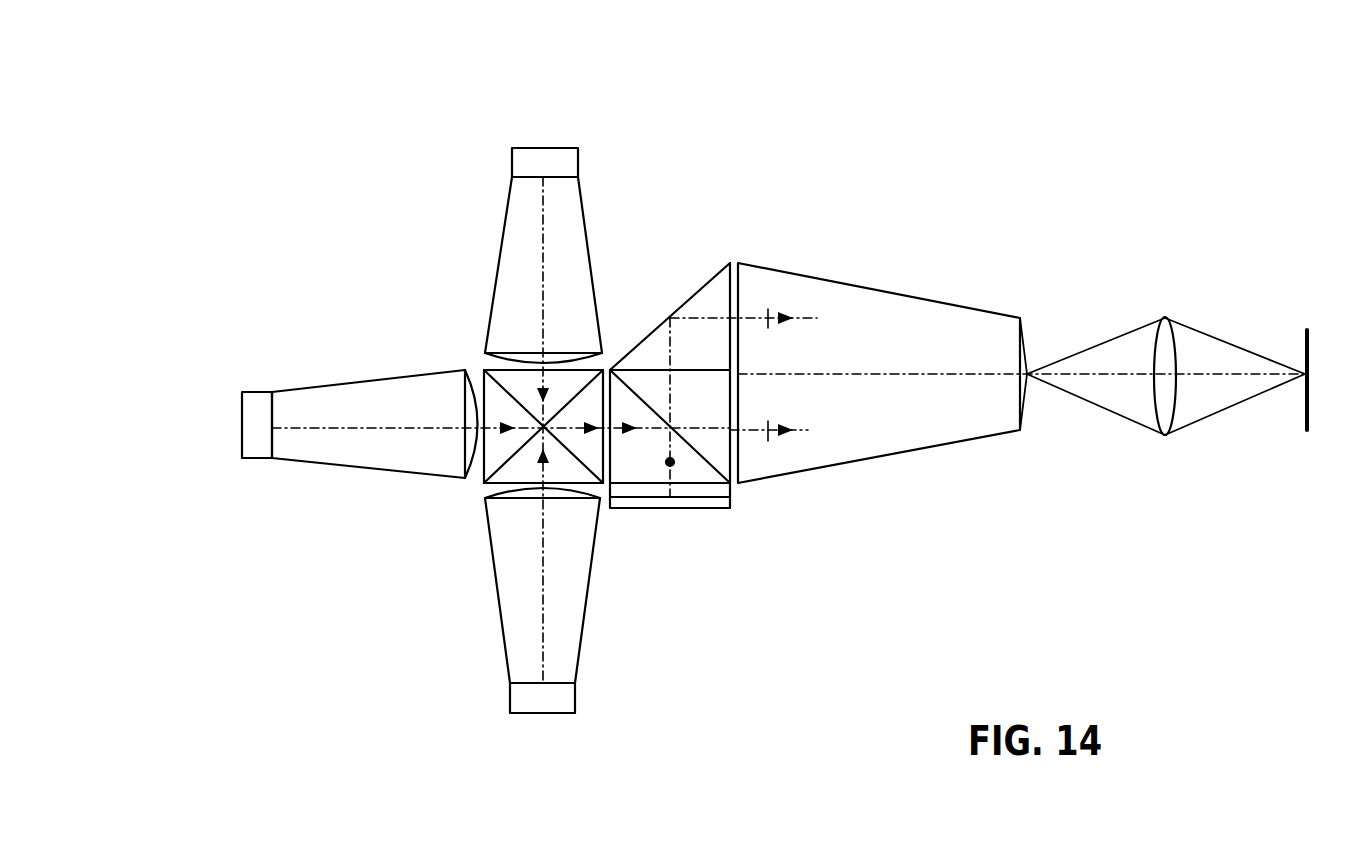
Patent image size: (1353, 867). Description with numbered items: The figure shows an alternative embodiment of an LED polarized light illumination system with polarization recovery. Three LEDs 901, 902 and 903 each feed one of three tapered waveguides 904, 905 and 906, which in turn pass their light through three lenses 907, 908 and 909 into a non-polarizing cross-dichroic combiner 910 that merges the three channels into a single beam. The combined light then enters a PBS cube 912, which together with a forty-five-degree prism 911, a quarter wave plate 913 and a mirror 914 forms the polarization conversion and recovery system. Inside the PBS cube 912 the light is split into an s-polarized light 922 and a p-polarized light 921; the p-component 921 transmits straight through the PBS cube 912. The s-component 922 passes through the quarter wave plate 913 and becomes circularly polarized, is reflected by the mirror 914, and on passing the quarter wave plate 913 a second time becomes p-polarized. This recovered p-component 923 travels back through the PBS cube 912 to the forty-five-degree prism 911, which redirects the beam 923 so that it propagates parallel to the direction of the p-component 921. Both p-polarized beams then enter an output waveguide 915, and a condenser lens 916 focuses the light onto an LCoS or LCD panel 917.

The LED 901 is at (530, 148).
The LED 902 is at (240, 457).
The LED 903 is at (532, 700).
The tapered waveguide 904 is at (518, 273).
The tapered waveguide 905 is at (370, 450).
The tapered waveguide 906 is at (573, 577).
The lens 907 is at (495, 368).
The lens 908 is at (476, 472).
The lens 909 is at (580, 500).
The non-polarizing cross-dichroic combiner 910 is at (606, 372).
The 45-degree prism 911 is at (703, 318).
The PBS cube 912 is at (655, 400).
The quarter wave plate 913 is at (733, 497).
The mirror 914 is at (715, 512).
The output waveguide 915 is at (978, 423).
The condenser lens 916 is at (1167, 318).
The LCoS or LCD panel 917 is at (1302, 340).
The p-polarized light 921 is at (770, 437).
The s-polarized light 922 is at (670, 466).
The recovered p-component 923 is at (773, 318).